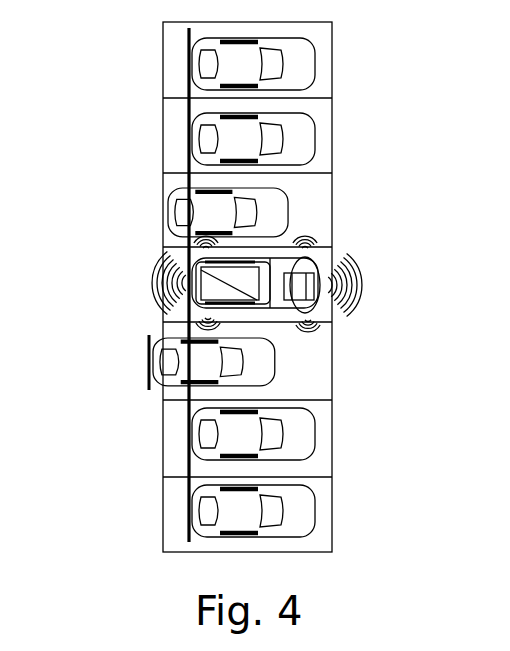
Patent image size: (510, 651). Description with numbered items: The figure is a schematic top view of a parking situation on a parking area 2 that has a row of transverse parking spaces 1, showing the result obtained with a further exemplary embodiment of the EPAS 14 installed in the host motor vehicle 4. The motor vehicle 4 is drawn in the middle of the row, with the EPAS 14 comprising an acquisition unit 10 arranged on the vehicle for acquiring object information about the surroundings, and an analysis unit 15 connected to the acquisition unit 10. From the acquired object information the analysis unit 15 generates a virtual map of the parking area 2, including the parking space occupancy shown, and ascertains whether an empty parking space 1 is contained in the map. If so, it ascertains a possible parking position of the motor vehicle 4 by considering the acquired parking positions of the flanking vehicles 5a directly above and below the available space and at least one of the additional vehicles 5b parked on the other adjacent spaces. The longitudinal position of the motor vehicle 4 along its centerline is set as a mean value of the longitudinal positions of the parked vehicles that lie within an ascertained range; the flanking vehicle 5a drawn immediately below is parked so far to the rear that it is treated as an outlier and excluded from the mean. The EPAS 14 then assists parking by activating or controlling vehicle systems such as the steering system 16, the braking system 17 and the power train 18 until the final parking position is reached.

The parking space 1 is at (300, 455).
The parking area 2 is at (345, 383).
The motor vehicle 4 is at (157, 277).
The flanking vehicle 5a is at (170, 205).
The additional vehicle 5b is at (315, 80).
The acquisition unit 10 is at (253, 291).
The EPAS 14 is at (305, 248).
The analysis unit 15 is at (205, 247).
The steering system 16 is at (320, 318).
The braking system 17 is at (300, 294).
The power train 18 is at (318, 322).